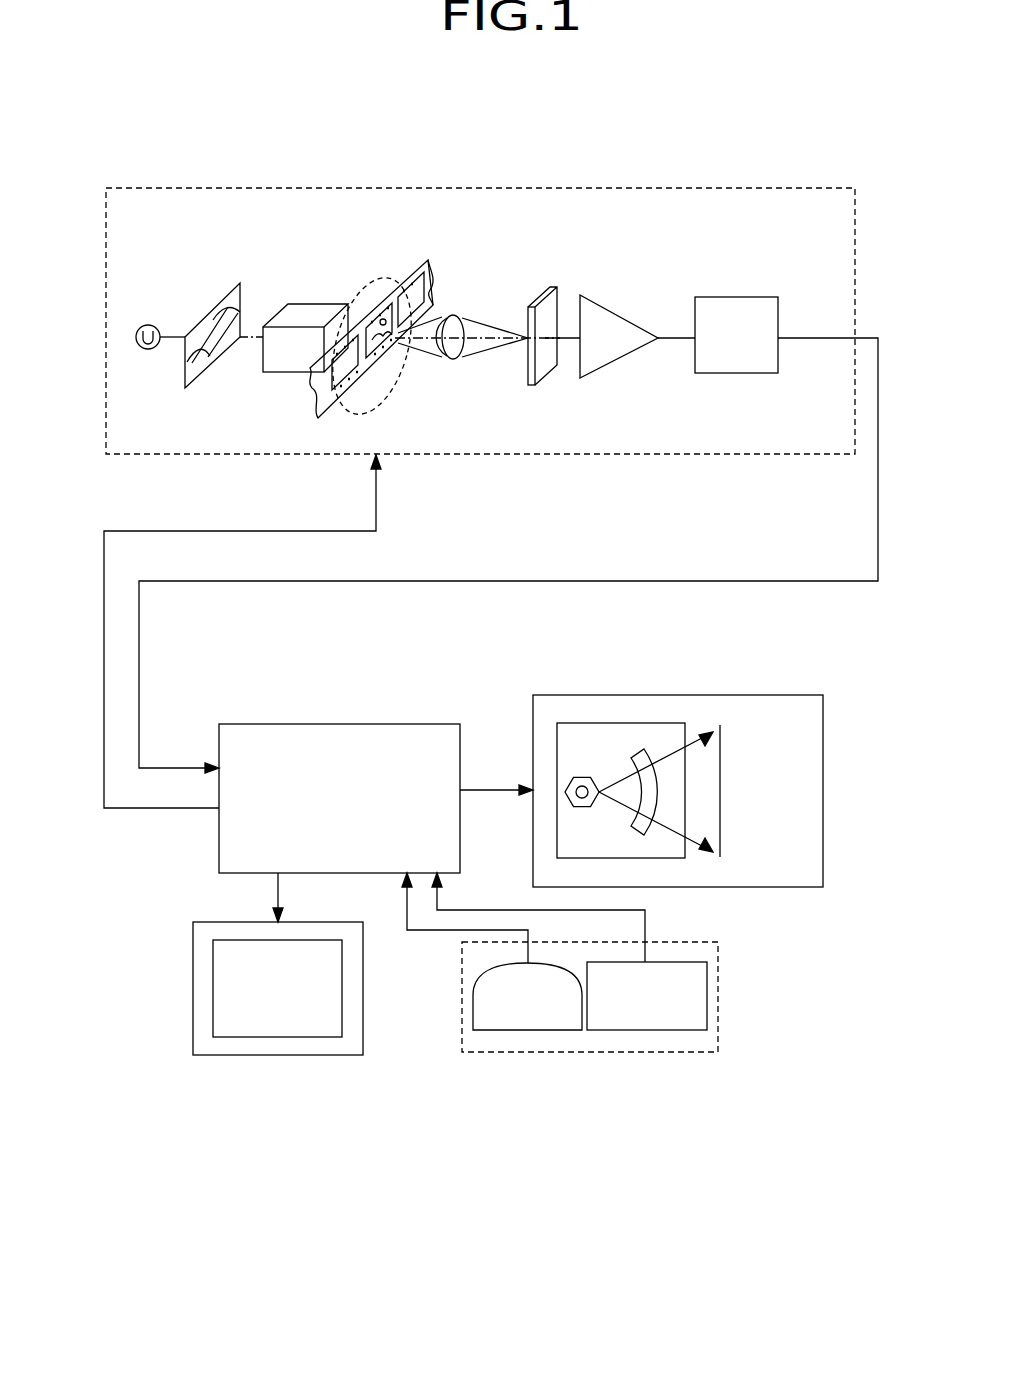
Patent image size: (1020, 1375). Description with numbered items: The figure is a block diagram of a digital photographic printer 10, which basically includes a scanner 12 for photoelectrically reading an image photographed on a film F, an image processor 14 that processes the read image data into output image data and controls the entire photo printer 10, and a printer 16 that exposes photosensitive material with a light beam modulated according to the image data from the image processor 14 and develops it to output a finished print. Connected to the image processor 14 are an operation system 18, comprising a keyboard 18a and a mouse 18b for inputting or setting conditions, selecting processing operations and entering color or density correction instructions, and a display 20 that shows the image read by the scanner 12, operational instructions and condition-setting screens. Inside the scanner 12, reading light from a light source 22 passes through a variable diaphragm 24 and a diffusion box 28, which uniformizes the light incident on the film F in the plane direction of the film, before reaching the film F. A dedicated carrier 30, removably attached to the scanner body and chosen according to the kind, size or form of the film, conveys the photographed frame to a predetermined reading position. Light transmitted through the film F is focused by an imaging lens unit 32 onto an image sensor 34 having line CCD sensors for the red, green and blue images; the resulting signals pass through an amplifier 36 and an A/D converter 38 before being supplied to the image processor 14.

The digital photographic printer 10 is at (735, 158).
The scanner 12 is at (312, 187).
The image processor 14 is at (339, 724).
The printer 16 is at (675, 695).
The operation system 18 is at (583, 1052).
The keyboard 18a is at (642, 1030).
The mouse 18b is at (518, 1030).
The display 20 is at (268, 1055).
The light source 22 is at (148, 325).
The variable diaphragm 24 is at (218, 296).
The diffusion box 28 is at (306, 320).
The carrier 30 is at (400, 373).
The imaging lens unit 32 is at (452, 315).
The image sensor 34 is at (548, 306).
The amplifier 36 is at (620, 360).
The A/D converter 38 is at (753, 351).
The film F is at (421, 259).